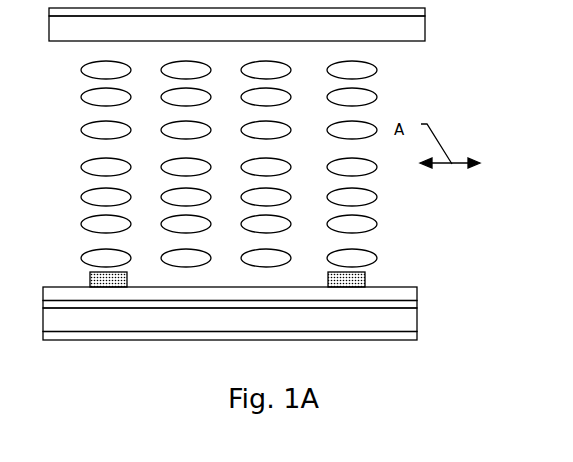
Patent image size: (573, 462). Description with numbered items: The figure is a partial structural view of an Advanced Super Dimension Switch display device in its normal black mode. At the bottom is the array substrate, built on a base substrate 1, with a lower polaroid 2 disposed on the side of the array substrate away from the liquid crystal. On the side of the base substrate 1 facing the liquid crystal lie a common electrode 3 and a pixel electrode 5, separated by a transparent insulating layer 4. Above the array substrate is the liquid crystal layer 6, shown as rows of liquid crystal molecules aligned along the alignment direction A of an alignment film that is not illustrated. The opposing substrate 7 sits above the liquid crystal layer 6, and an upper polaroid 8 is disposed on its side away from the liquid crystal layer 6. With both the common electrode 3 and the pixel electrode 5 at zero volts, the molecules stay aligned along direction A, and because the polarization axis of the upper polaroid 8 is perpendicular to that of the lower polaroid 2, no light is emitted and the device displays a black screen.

The base substrate 1 is at (407, 318).
The lower polaroid 2 is at (408, 335).
The common electrode 3 is at (407, 305).
The transparent insulating layer 4 is at (407, 293).
The pixel electrode 5 is at (360, 282).
The liquid crystal layer 6 is at (360, 225).
The opposing substrate 7 is at (403, 27).
The upper polaroid 8 is at (403, 13).